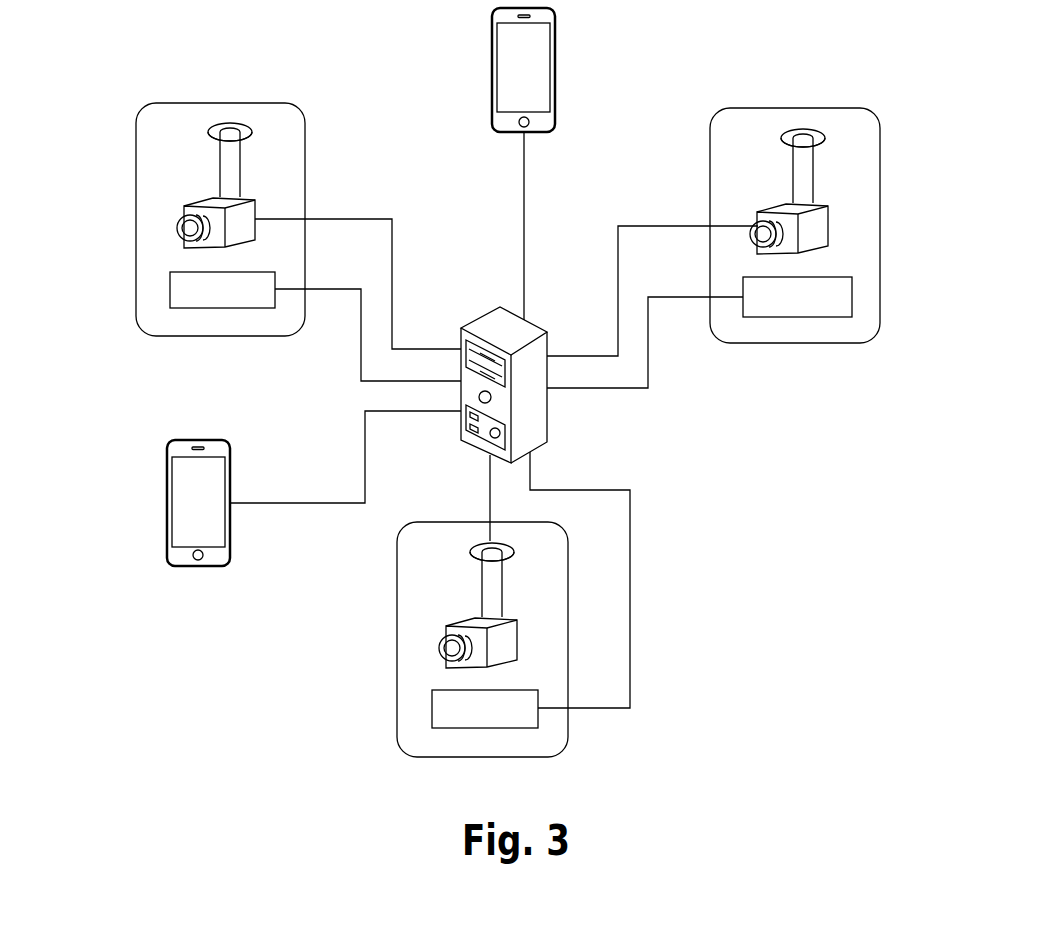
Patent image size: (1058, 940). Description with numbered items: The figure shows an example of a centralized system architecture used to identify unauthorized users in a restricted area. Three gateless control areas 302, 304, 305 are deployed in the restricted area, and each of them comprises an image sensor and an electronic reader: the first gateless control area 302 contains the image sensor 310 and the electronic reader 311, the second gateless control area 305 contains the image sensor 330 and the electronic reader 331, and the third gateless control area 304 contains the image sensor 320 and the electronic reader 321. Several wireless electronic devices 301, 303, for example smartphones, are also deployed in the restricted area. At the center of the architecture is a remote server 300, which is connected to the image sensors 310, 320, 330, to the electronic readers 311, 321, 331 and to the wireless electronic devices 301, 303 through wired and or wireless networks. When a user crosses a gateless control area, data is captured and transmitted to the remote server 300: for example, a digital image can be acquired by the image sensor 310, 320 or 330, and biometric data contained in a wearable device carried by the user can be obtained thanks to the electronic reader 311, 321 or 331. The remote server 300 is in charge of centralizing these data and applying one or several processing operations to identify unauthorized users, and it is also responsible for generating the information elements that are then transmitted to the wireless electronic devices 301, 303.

The remote server 300 is at (538, 417).
The wireless electronic device 301 is at (497, 78).
The gateless control area 302 is at (136, 145).
The wireless electronic device 303 is at (197, 567).
The gateless control area 304 is at (397, 665).
The gateless control area 305 is at (793, 343).
The image sensor 310 is at (183, 226).
The electronic reader 311 is at (170, 288).
The image sensor 320 is at (482, 588).
The electronic reader 321 is at (432, 708).
The image sensor 330 is at (828, 228).
The electronic reader 331 is at (852, 297).